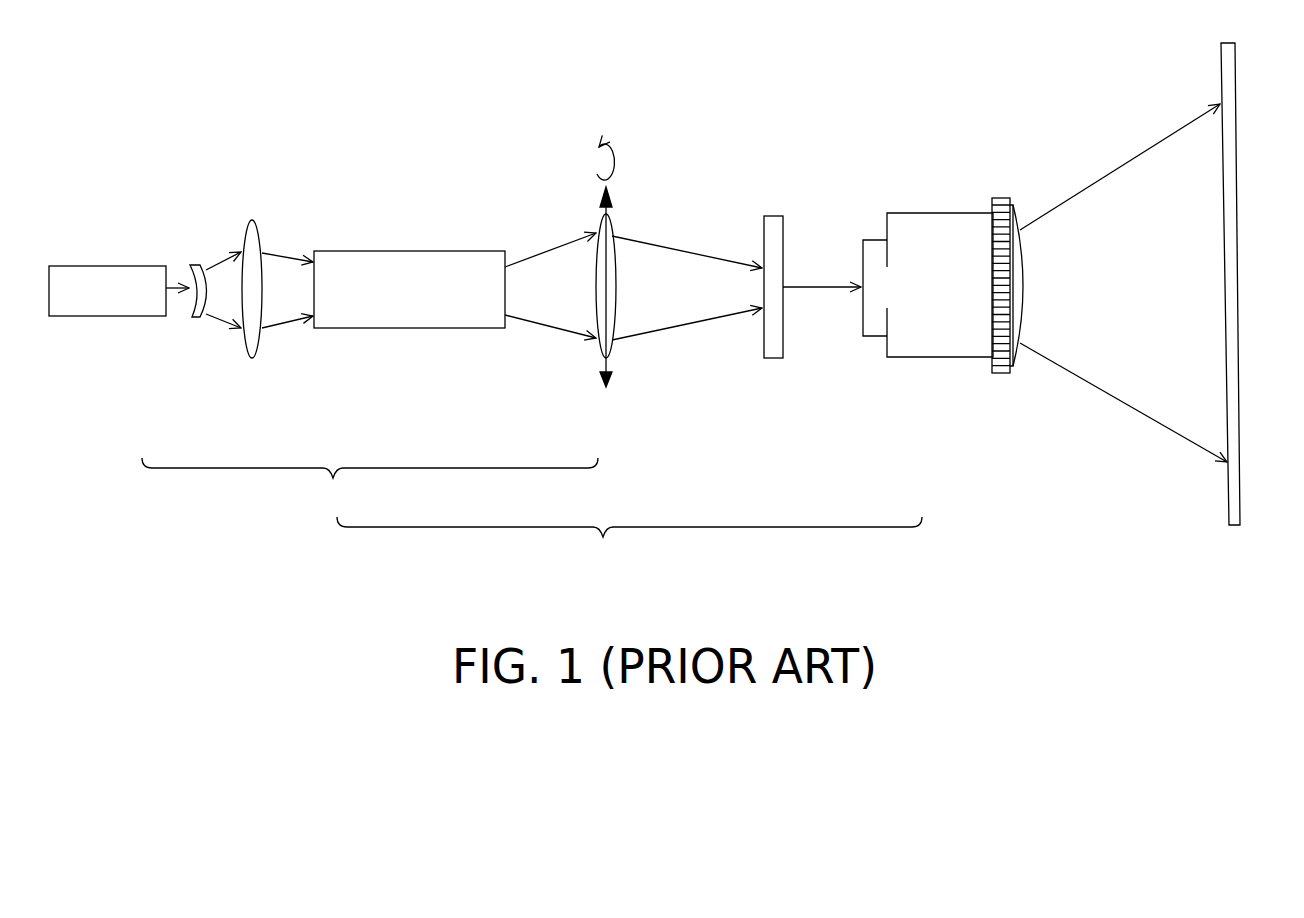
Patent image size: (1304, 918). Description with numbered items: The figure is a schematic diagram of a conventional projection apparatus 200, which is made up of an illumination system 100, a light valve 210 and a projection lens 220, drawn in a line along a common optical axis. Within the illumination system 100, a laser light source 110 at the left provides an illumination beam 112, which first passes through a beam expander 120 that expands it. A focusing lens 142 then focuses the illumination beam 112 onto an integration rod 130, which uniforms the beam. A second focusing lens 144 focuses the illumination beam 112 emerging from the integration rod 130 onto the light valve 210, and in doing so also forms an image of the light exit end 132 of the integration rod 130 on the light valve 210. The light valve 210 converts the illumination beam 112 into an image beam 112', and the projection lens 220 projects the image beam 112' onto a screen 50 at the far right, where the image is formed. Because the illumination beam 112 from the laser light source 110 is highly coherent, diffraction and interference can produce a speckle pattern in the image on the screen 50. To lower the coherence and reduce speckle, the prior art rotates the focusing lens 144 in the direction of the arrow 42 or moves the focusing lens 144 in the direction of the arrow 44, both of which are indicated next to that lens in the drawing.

The laser light source 110 is at (130, 317).
The illumination beam 112 is at (169, 238).
The beam expander 120 is at (195, 318).
The focusing lens 142 is at (253, 358).
The integration rod 130 is at (388, 329).
The light exit end 132 is at (508, 327).
The focusing lens 144 is at (607, 360).
The arrow 44 is at (607, 215).
The arrow 42 is at (613, 165).
The light valve 210 is at (771, 359).
The image beam 112' is at (822, 226).
The projection lens 220 is at (918, 358).
The screen 50 is at (1237, 497).
The illumination system 100 is at (370, 487).
The projection apparatus 200 is at (629, 545).